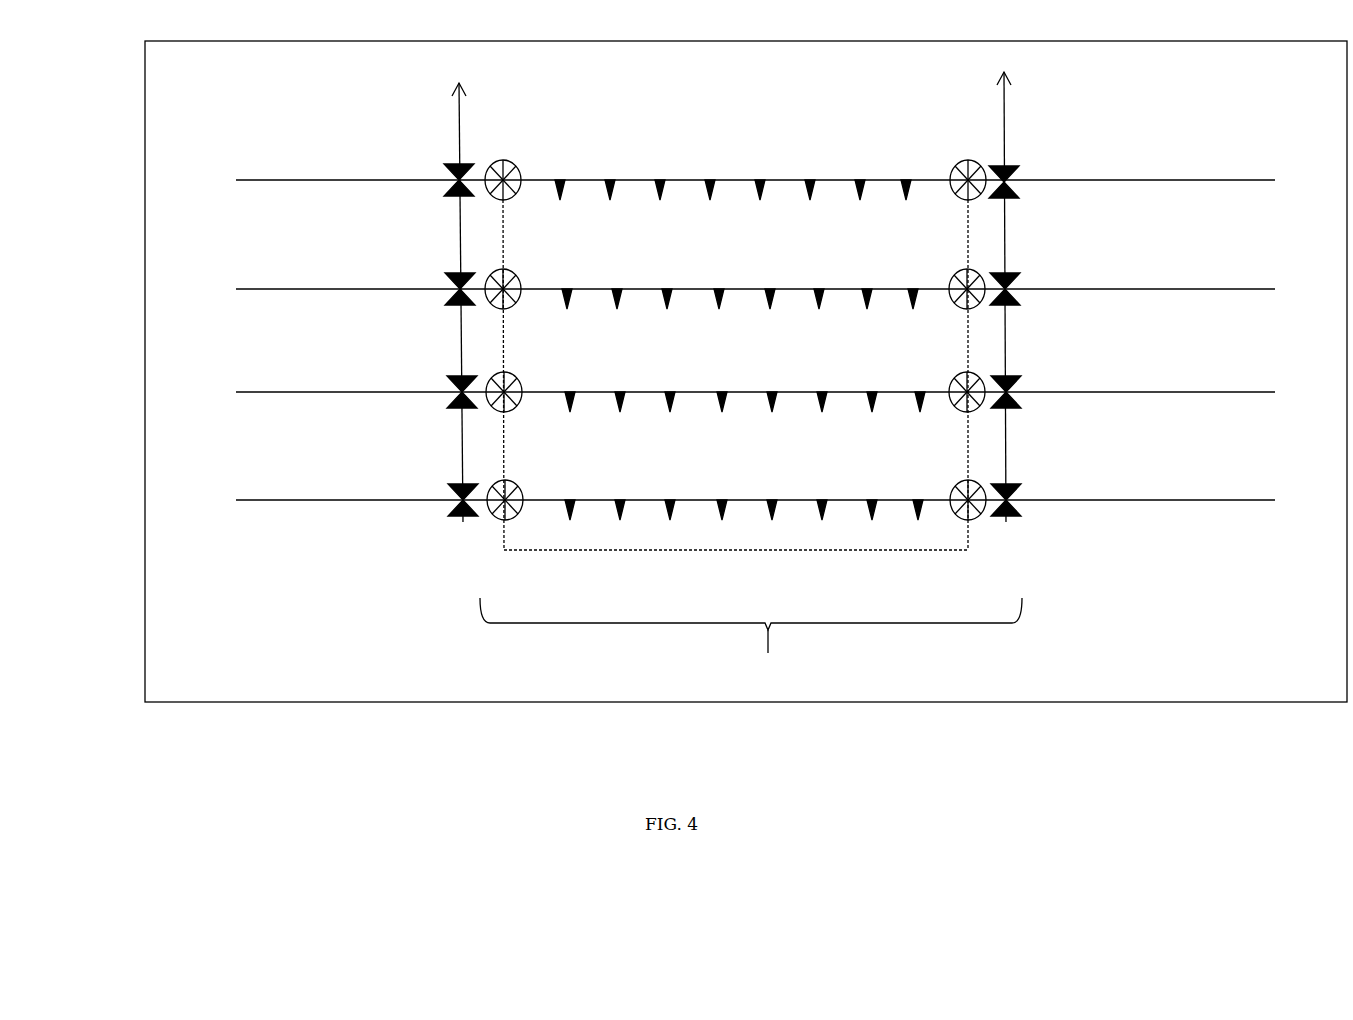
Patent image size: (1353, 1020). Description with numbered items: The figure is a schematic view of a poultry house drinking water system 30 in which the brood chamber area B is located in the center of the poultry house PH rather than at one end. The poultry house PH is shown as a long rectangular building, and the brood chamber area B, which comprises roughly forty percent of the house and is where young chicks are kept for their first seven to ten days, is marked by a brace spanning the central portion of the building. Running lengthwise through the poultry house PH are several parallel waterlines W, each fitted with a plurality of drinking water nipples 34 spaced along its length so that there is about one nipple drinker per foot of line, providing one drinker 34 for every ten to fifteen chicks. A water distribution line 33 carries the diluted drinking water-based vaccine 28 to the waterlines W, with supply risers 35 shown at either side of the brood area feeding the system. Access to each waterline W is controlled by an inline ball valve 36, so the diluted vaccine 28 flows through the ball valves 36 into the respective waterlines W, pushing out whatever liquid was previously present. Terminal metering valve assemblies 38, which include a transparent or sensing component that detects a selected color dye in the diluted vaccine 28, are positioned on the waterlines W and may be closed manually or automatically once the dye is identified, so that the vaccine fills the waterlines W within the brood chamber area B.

The irrigation system 30 is at (100, 190).
The poultry house PH is at (145, 370).
The waterline W is at (752, 498).
The drinking water nipples 34 is at (740, 350).
The riser supply pipe 35 is at (455, 120).
The inline ball valve 36 is at (455, 176).
The terminal metering valve assembly 38 is at (518, 162).
The water distribution line 33 is at (505, 427).
The diluted drinking water-based vaccine 28 is at (750, 551).
The brood chamber area B is at (751, 642).